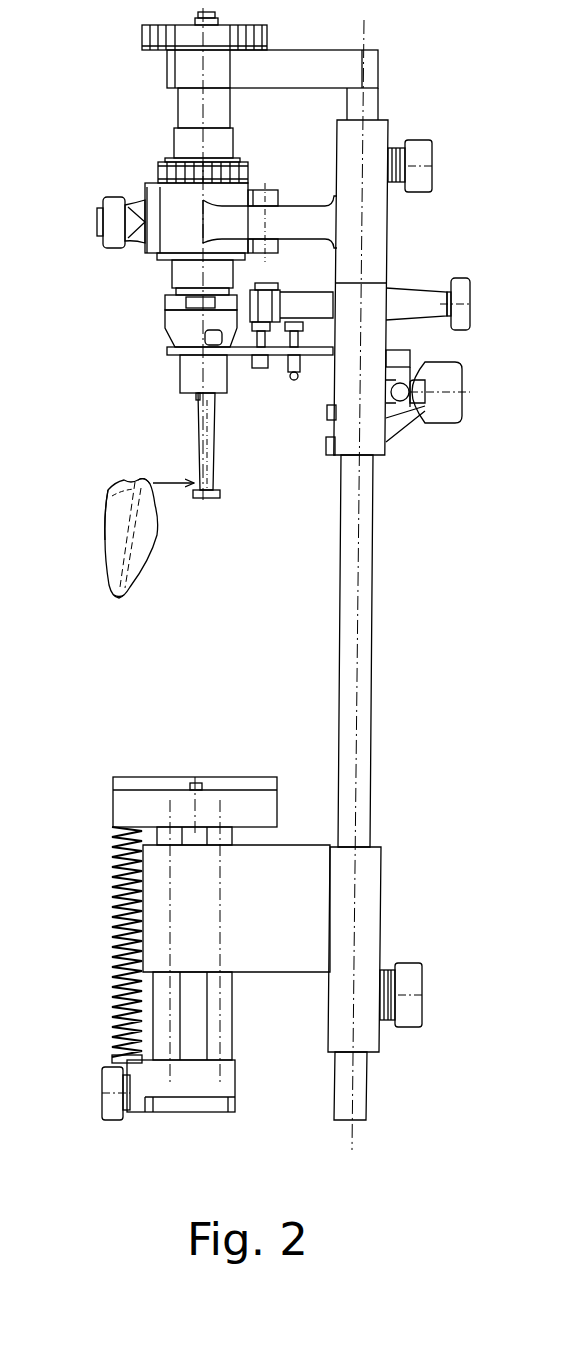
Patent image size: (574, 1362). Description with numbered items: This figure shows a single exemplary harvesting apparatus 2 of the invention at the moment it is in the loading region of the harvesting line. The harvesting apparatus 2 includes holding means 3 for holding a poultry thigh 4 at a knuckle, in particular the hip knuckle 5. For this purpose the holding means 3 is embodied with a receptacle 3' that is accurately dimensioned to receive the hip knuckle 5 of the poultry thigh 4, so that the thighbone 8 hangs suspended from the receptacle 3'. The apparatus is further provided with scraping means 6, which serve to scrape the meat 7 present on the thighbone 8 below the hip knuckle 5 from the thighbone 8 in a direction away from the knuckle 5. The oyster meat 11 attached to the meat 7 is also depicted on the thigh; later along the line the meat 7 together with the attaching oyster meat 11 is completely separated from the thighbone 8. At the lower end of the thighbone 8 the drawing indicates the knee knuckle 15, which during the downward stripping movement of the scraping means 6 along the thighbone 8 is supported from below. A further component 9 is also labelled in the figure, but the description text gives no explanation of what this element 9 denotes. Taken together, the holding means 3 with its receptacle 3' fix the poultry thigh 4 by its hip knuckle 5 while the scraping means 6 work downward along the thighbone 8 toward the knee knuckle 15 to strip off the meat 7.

The harvesting apparatus 2 is at (124, 320).
The holding means 3 is at (226, 441).
The receptacle 3' is at (231, 503).
The poultry thigh 4 is at (144, 571).
The hip knuckle 5 is at (151, 480).
The scraping means 6 is at (235, 357).
The meat 7 is at (116, 520).
The thighbone 8 is at (132, 533).
The spindle shaft 9 is at (176, 386).
The oyster meat 11 is at (127, 486).
The knee knuckle 15 is at (114, 592).